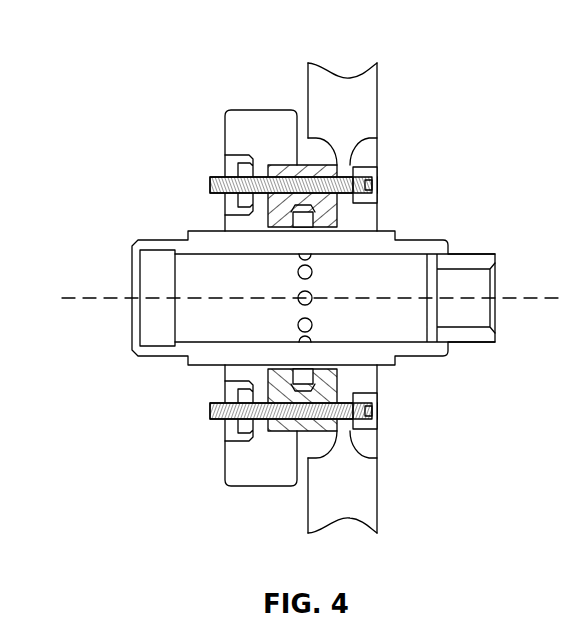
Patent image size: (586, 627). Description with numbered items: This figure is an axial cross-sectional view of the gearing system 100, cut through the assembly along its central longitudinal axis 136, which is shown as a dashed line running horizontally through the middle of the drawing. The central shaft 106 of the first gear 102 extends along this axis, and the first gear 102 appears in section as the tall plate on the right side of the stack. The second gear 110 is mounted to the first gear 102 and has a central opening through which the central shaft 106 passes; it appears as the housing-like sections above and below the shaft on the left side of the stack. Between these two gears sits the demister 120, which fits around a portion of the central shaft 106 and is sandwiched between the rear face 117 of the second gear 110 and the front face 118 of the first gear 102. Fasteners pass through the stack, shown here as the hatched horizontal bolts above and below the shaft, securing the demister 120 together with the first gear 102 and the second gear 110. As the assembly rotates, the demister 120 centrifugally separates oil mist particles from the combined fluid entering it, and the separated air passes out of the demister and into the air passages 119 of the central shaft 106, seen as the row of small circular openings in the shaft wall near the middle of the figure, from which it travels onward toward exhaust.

The gearing system 100 is at (118, 68).
The first gear 102 is at (382, 76).
The central shaft 106 is at (200, 230).
The second gear 110 is at (255, 110).
The rear face 117 is at (270, 172).
The front face 118 is at (340, 165).
The air passages 119 is at (312, 298).
The demister 120 is at (295, 433).
The central longitudinal axis 136 is at (93, 298).